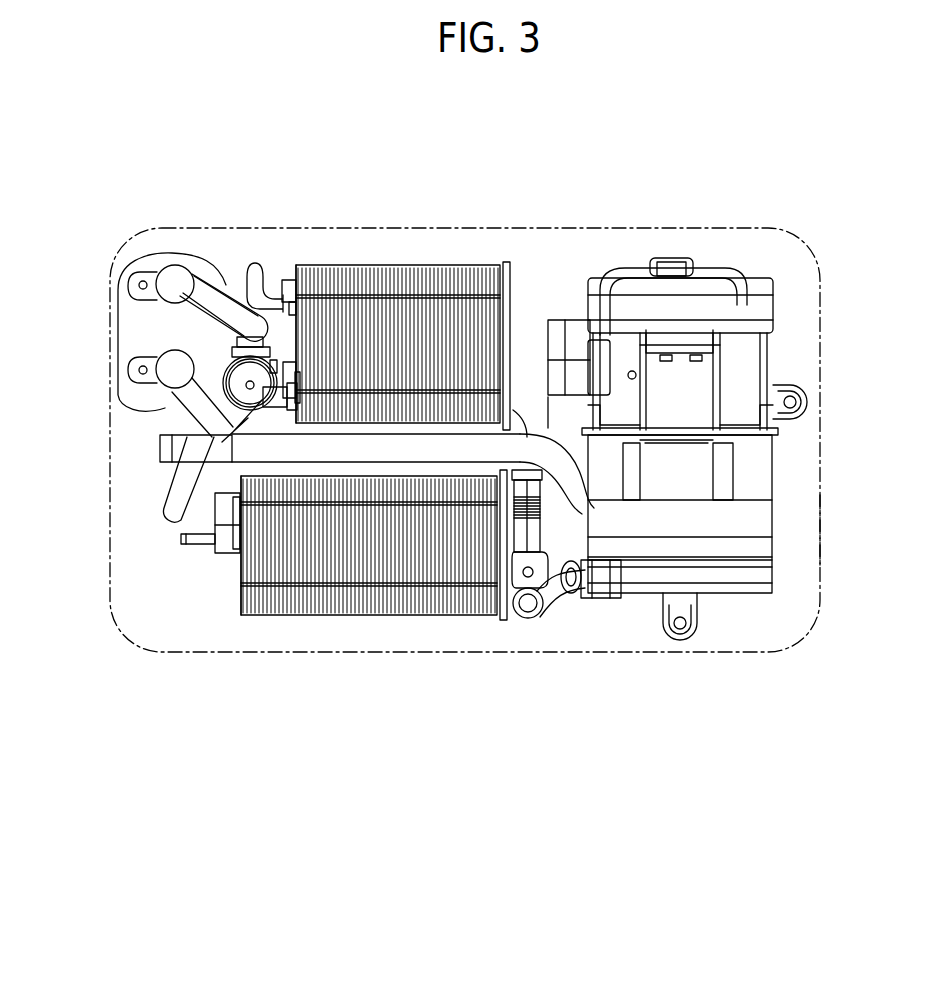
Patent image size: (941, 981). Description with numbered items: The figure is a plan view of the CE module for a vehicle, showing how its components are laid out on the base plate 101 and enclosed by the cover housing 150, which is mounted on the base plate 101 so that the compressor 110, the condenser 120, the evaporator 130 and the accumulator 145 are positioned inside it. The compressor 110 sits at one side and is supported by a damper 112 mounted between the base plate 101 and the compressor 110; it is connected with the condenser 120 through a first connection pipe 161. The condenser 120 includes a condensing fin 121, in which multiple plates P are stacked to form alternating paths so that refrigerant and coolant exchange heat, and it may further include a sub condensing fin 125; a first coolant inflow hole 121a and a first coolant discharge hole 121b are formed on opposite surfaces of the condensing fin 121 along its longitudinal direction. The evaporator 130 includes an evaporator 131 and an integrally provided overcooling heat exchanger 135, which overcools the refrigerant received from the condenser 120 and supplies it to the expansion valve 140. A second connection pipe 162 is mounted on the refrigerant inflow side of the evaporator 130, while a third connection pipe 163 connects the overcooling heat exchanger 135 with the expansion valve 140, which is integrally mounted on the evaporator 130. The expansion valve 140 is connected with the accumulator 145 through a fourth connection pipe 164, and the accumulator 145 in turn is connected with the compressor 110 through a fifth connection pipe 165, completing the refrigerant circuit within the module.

The base plate 101 is at (796, 528).
The compressor 110 is at (757, 470).
The damper 112 is at (808, 404).
The condenser 120 is at (335, 605).
The condensing fin 121 is at (497, 632).
The first coolant inflow hole 121a is at (216, 513).
The first coolant discharge hole 121b is at (550, 525).
The sub condensing fin 125 is at (240, 632).
The evaporator 130 is at (396, 286).
The evaporator 131 is at (500, 256).
The overcooling heat exchanger 135 is at (330, 256).
The expansion valve 140 is at (232, 373).
The accumulator 145 is at (110, 328).
The cover housing 150 is at (806, 238).
The first connection pipe 161 is at (567, 590).
The second connection pipe 162 is at (178, 490).
The third connection pipe 163 is at (265, 291).
The fourth connection pipe 164 is at (228, 308).
The fifth connection pipe 165 is at (517, 400).
The plates P is at (465, 340).